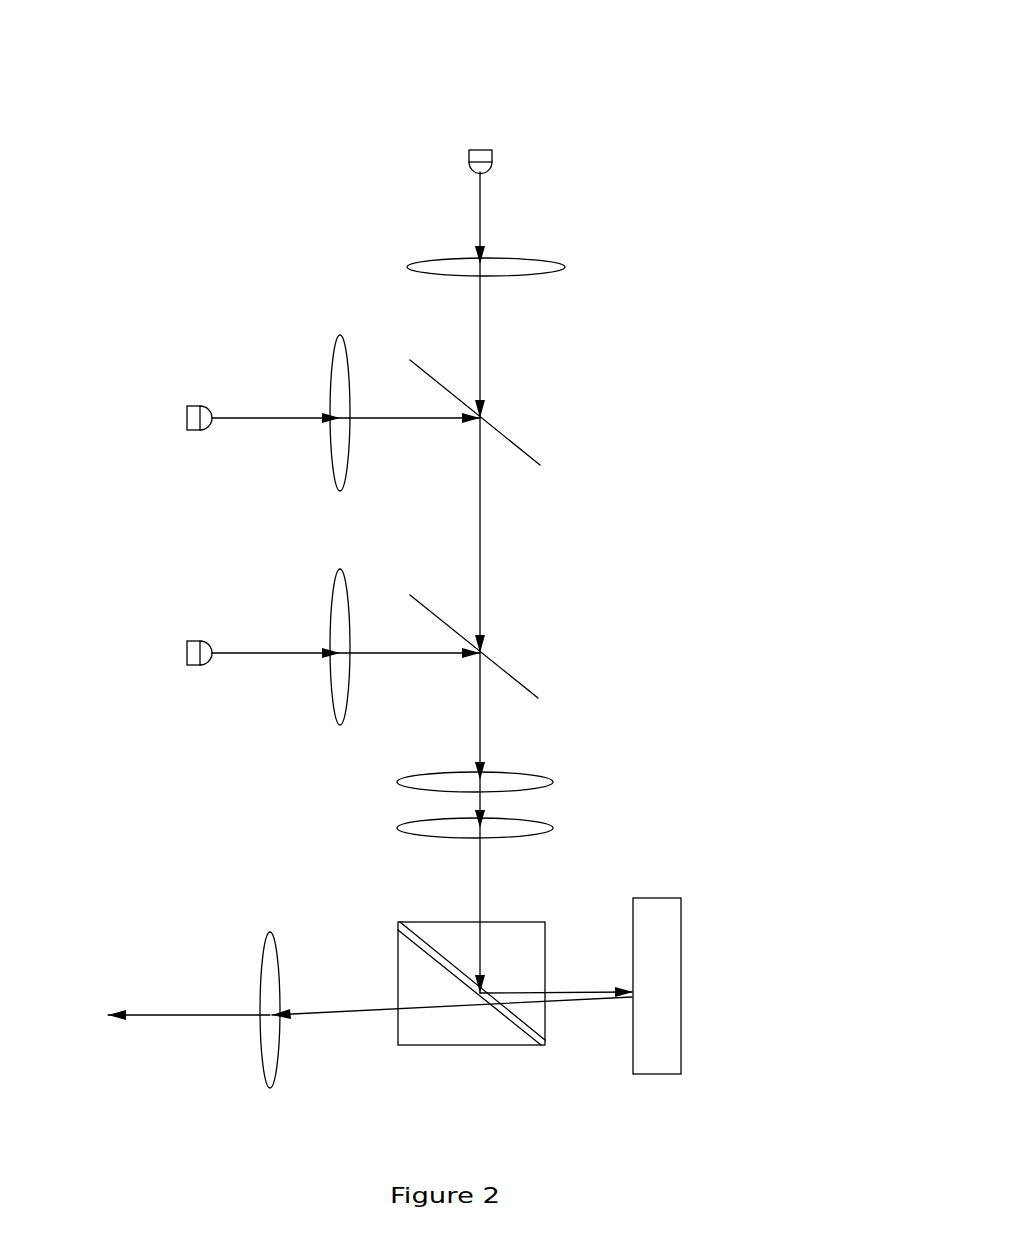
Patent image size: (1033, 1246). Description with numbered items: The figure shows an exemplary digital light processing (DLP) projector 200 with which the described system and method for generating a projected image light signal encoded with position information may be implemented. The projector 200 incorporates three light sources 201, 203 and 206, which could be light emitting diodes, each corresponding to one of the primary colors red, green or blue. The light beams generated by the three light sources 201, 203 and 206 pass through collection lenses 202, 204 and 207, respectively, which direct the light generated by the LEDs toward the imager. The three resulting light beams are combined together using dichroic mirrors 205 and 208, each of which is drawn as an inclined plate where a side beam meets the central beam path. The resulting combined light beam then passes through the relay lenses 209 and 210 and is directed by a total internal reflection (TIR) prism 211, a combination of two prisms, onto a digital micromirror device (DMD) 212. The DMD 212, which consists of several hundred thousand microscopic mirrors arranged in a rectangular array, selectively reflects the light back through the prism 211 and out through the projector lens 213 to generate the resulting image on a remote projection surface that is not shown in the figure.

The digital light processing (DLP) projector 200 is at (535, 78).
The light source 201 is at (494, 153).
The collection lens 202 is at (565, 270).
The light source 203 is at (200, 432).
The collection lens 204 is at (337, 489).
The dichroic mirror 205 is at (538, 466).
The light source 206 is at (200, 667).
The collection lens 207 is at (337, 723).
The dichroic mirror 208 is at (535, 695).
The relay lens 209 is at (553, 776).
The relay lens 210 is at (400, 840).
The total internal reflection (TIR) prism 211 is at (475, 1047).
The digital micromirror device (DMD) 212 is at (682, 958).
The projector lens 213 is at (268, 931).